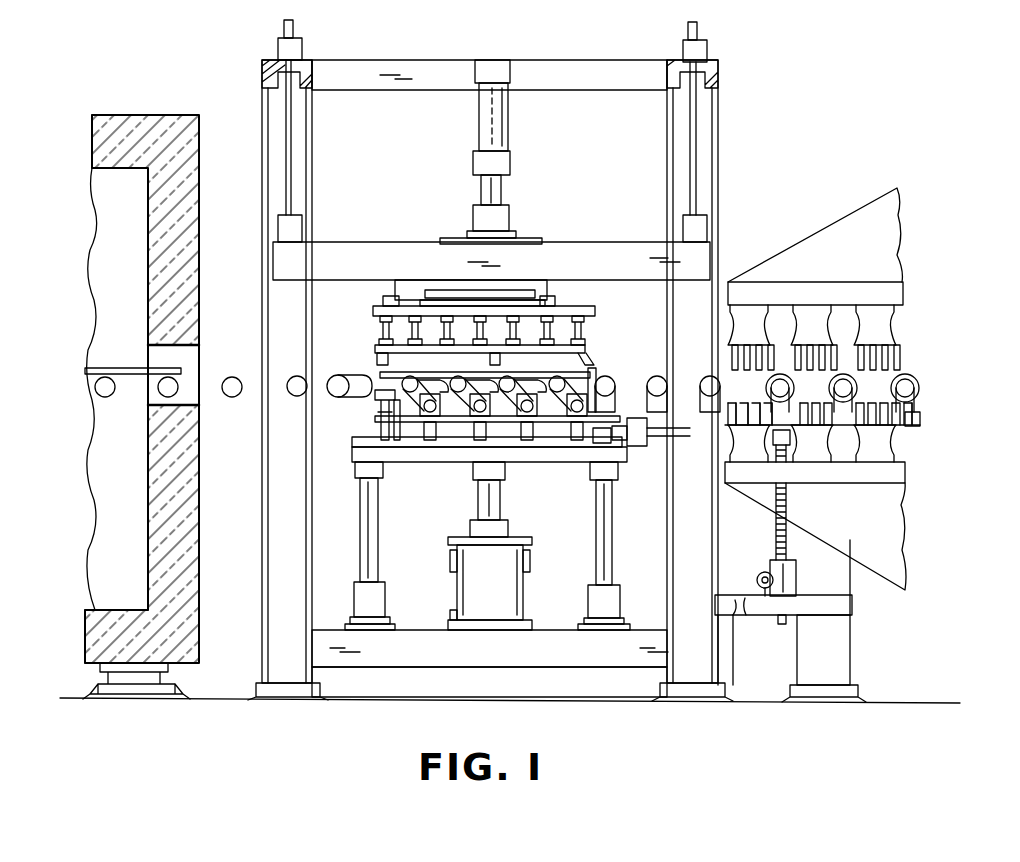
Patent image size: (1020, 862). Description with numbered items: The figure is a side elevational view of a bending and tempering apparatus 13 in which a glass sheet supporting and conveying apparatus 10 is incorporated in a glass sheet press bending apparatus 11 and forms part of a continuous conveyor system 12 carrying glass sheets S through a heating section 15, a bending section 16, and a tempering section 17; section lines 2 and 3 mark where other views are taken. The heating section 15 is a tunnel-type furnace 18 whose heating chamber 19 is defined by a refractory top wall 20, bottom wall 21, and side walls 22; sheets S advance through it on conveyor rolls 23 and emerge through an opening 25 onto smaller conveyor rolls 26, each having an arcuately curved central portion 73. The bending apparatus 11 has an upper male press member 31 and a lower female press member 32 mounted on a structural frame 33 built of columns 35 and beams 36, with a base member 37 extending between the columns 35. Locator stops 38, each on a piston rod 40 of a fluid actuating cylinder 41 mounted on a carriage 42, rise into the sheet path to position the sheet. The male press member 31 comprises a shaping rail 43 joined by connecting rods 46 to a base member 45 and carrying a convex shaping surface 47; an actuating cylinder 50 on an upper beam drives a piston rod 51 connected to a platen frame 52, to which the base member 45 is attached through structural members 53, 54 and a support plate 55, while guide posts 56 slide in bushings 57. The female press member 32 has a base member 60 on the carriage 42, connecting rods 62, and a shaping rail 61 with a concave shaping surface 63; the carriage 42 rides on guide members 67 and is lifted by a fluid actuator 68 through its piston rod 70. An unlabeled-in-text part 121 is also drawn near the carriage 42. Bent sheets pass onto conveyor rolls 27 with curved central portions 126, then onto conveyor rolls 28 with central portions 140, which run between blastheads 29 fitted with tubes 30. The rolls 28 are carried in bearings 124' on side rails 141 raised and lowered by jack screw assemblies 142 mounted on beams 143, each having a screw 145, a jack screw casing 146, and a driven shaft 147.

The glass sheet supporting and conveying apparatus 10 is at (446, 400).
The glass sheet press bending apparatus 11 is at (402, 296).
The conveyor system 12 is at (230, 406).
The bending and tempering apparatus 13 is at (232, 25).
The heating section 15 is at (140, 86).
The bending section 16 is at (442, 40).
The tempering section 17 is at (856, 190).
The tunnel-type furnace 18 is at (181, 113).
The heating chamber 19 is at (98, 268).
The top wall 20 is at (96, 147).
The bottom wall 21 is at (100, 625).
The side walls 22 is at (125, 516).
The conveyor rolls 23 is at (233, 378).
The opening 25 is at (183, 352).
The conveyor rolls 26 is at (446, 380).
The conveyor rolls 27 is at (660, 376).
The conveyor rolls 28 is at (908, 390).
The blastheads 29 is at (812, 322).
The tubes 30 is at (892, 360).
The upper male press member 31 is at (352, 332).
The lower female press member 32 is at (345, 436).
The structural frame 33 is at (590, 62).
The columns 35 is at (305, 155).
The beams 36 is at (312, 72).
The base member 37 is at (436, 660).
The locator stops 38 is at (604, 370).
The piston rod 40 is at (598, 408).
The fluid actuating cylinder 41 is at (586, 461).
The carriage 42 is at (468, 465).
The shaping rail 43 is at (376, 349).
The base member 45 is at (378, 306).
The connecting rods 46 is at (384, 326).
The shaping surface 47 is at (376, 362).
The actuating cylinder 50 is at (508, 116).
The piston rod 51 is at (500, 184).
The platen frame 52 is at (645, 243).
The structural member 53 is at (518, 296).
The structural member 54 is at (392, 296).
The support plate 55 is at (428, 282).
The guide posts 56 is at (291, 114).
The bushings 57 is at (296, 42).
The base member 60 is at (433, 441).
The shaping rail 61 is at (376, 440).
The connecting rods 62 is at (399, 442).
The shaping surface 63 is at (362, 397).
The guide members 67 is at (365, 542).
The fluid actuator 68 is at (498, 600).
The piston rod 70 is at (500, 512).
The central portion 73 is at (500, 342).
The coupling 121 is at (503, 455).
The bearings 124' is at (848, 413).
The central portions 126 is at (662, 430).
The central portions 140 is at (916, 425).
The side rails 141 is at (840, 455).
The jack screw assemblies 142 is at (764, 524).
The beams 143 is at (745, 620).
The screw 145 is at (797, 575).
The jack screw casing 146 is at (790, 586).
The shaft 147 is at (760, 598).
The glass sheets S is at (115, 370).
The section line 2 is at (590, 331).
The section line 3 is at (276, 406).